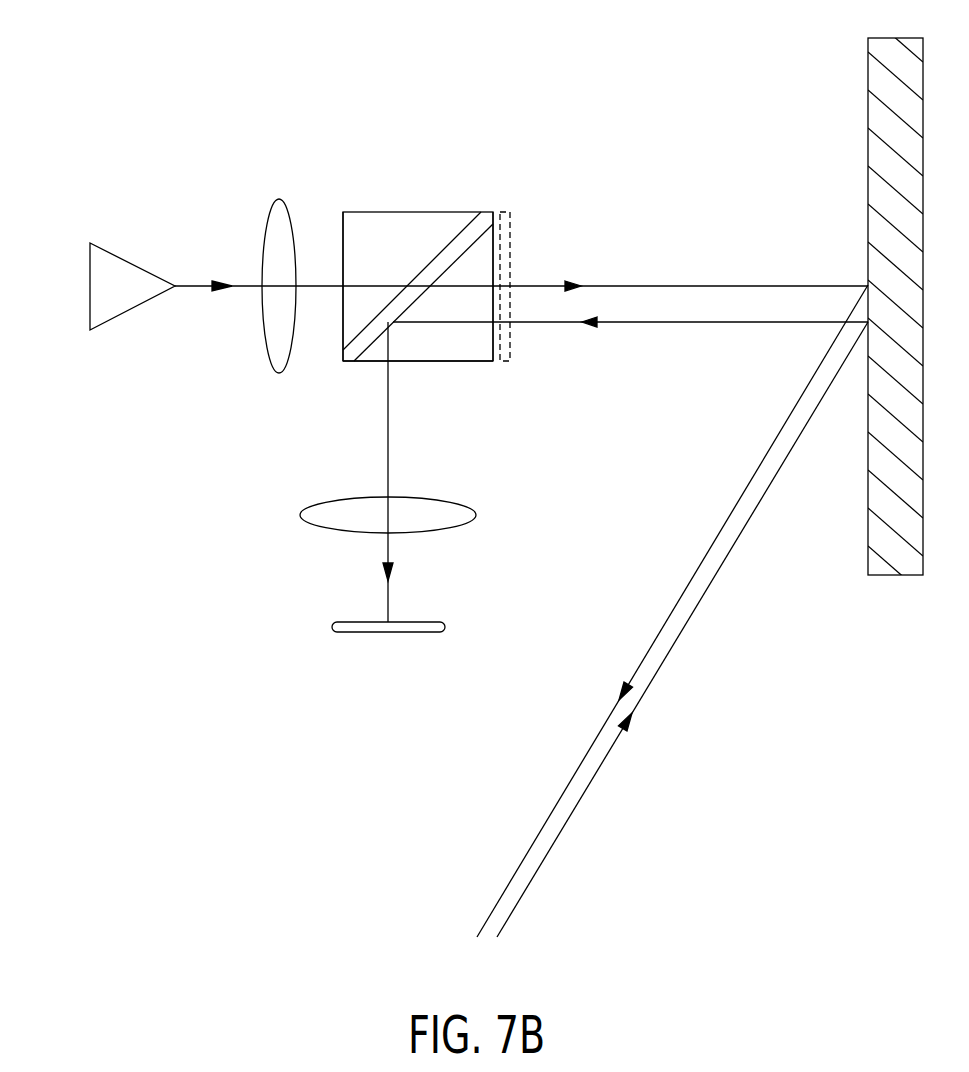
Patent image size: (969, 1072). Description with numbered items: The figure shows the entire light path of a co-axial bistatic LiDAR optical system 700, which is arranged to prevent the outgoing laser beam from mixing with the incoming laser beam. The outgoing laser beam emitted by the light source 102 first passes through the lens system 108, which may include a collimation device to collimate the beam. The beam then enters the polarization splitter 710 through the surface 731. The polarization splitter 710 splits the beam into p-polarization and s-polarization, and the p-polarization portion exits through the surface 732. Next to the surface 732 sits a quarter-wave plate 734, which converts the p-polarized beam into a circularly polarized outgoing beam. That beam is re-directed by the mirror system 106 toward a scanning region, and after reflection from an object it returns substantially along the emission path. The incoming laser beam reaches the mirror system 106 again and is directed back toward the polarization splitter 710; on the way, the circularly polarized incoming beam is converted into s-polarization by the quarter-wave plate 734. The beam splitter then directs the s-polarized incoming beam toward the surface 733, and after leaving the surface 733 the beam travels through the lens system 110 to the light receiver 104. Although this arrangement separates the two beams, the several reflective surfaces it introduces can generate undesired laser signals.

The light source 102 is at (90, 285).
The light receiver 104 is at (332, 627).
The mirror system 106 is at (868, 51).
The lens system 108 is at (262, 316).
The lens system 110 is at (302, 515).
The optical system 700 is at (483, 211).
The polarization splitter 710 is at (407, 240).
The surface 731 is at (343, 215).
The surface 732 is at (494, 340).
The surface 733 is at (368, 362).
The quarter-wave plate 734 is at (512, 245).